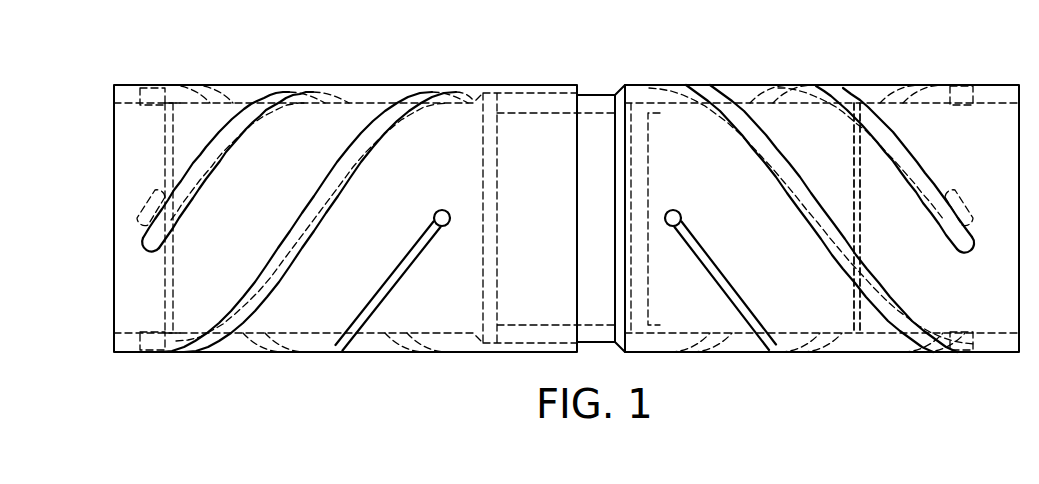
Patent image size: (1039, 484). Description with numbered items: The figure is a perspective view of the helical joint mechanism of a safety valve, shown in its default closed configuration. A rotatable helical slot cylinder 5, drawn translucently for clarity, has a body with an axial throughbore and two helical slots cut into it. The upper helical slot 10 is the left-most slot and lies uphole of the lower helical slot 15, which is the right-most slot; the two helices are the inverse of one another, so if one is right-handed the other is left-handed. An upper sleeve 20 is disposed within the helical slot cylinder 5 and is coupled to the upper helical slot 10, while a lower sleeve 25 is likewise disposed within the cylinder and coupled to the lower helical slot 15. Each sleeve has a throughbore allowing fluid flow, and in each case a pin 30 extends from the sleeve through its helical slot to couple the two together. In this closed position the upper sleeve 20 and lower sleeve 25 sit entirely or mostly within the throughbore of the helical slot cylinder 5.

The helical slot cylinder 5 is at (874, 85).
The upper helical slot 10 is at (272, 97).
The lower helical slot 15 is at (917, 178).
The upper sleeve 20 is at (168, 157).
The lower sleeve 25 is at (860, 207).
The pin 30 is at (438, 211).